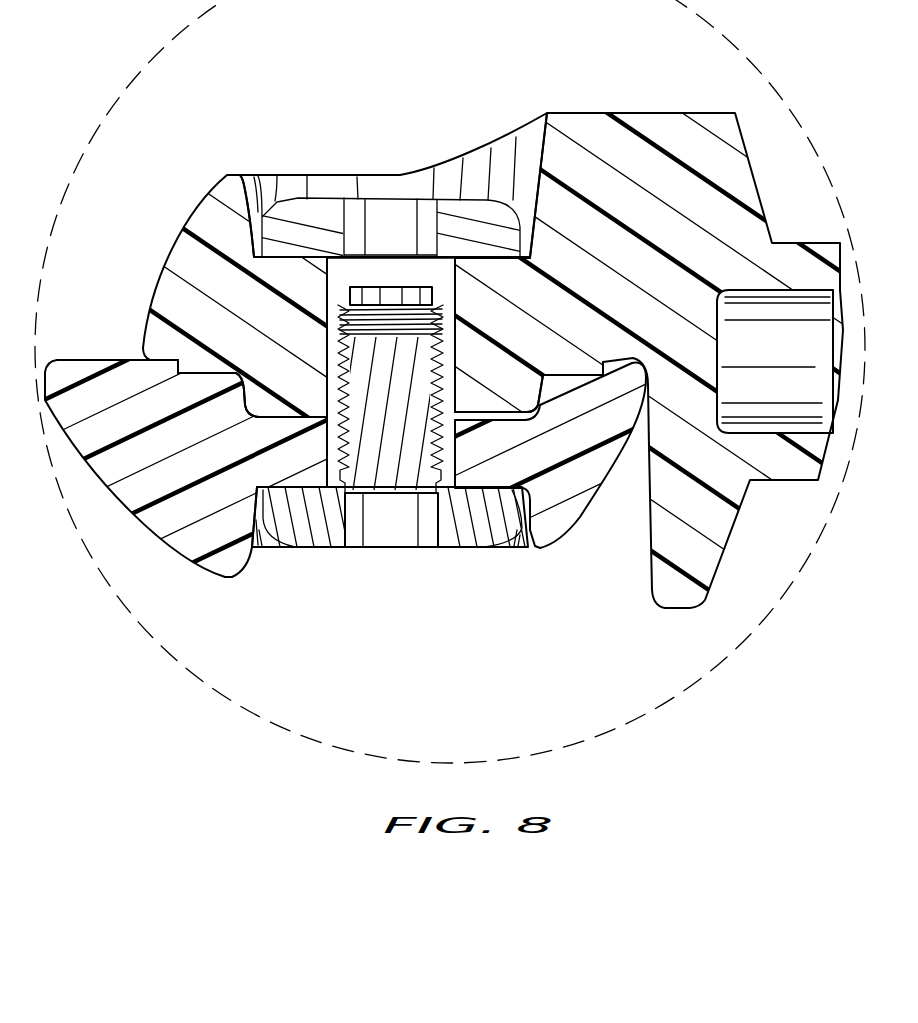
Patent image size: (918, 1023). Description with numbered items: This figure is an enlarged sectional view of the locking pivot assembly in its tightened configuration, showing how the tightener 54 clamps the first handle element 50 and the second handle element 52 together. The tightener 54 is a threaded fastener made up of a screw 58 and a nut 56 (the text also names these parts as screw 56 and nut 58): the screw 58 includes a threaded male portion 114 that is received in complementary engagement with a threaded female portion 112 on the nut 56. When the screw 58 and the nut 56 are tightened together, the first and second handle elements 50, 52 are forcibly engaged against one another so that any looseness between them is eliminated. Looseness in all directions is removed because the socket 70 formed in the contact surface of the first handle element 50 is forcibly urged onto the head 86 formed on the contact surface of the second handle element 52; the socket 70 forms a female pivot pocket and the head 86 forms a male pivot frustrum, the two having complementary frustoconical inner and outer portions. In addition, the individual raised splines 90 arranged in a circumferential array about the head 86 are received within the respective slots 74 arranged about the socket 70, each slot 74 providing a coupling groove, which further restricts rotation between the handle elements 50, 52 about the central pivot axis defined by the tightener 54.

The first handle element 50 is at (220, 580).
The second handle element 52 is at (582, 108).
The tightener 54 is at (318, 555).
The threaded hexagonal head screw 56 is at (323, 210).
The hexagonal head threaded nut 58 is at (465, 540).
The socket 70 is at (262, 414).
The slots 74 is at (284, 416).
The head 86 is at (238, 400).
The raised splines 90 is at (283, 405).
The threaded female portion 112 is at (327, 293).
The threaded male portion 114 is at (458, 367).